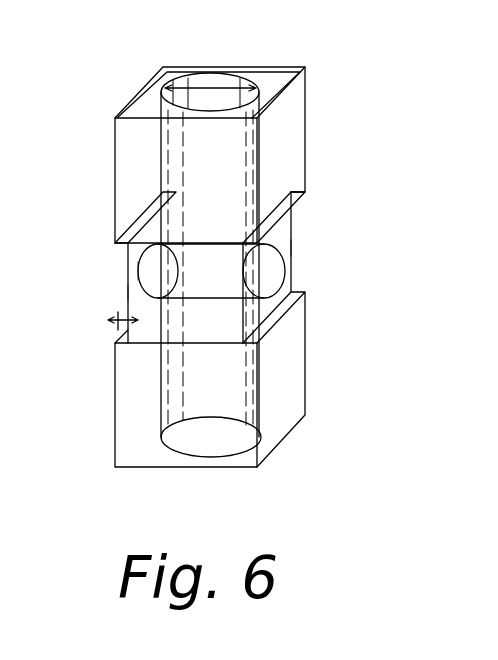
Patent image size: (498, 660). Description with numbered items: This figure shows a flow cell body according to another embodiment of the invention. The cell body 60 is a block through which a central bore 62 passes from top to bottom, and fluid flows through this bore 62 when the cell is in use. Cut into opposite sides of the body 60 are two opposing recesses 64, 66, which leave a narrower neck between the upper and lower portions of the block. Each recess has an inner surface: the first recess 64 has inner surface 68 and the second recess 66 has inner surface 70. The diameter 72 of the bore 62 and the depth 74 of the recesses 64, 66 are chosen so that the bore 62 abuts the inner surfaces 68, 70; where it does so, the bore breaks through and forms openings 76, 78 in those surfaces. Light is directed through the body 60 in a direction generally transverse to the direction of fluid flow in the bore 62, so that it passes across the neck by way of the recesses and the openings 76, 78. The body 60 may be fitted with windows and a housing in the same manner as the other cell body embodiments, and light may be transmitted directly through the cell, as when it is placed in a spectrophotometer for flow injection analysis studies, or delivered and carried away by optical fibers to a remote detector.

The cell body 60 is at (133, 98).
The central bore 62 is at (230, 73).
The diameter 72 is at (214, 90).
The recess 64 is at (125, 252).
The recess 66 is at (293, 261).
The inner surface 68 is at (128, 290).
The inner surface 70 is at (293, 213).
The depth 74 is at (108, 320).
The opening 76 is at (137, 272).
The opening 78 is at (293, 248).